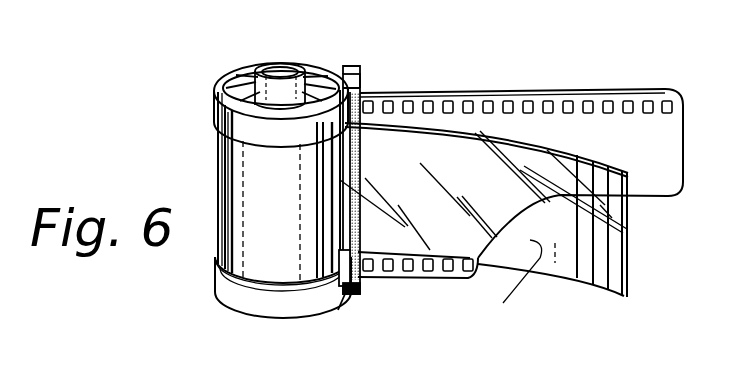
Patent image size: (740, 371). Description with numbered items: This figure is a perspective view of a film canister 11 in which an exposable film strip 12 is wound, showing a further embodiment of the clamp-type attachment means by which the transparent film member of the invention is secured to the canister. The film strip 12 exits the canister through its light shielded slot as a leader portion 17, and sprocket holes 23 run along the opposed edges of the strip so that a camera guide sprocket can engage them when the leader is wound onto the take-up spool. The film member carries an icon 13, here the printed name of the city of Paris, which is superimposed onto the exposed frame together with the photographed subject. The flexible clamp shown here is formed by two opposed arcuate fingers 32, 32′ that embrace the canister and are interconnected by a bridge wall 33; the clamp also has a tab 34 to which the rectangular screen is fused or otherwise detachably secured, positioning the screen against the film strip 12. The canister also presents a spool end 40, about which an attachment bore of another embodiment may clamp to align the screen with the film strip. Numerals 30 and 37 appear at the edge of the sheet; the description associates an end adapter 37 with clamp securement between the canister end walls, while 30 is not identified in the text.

The film canister 11 is at (262, 231).
The exposable film strip 12 is at (649, 163).
The icon 13 is at (511, 292).
The leader portion 17 is at (653, 137).
The sprocket holes 23 is at (588, 103).
The arcuate finger 32 is at (250, 132).
The arcuate finger 32′ is at (247, 293).
The bridge wall 33 is at (316, 232).
The tab 34 is at (360, 150).
The spool end 40 is at (312, 88).
The cartridge base 30 is at (109, 362).
The end adapter 37 is at (174, 362).